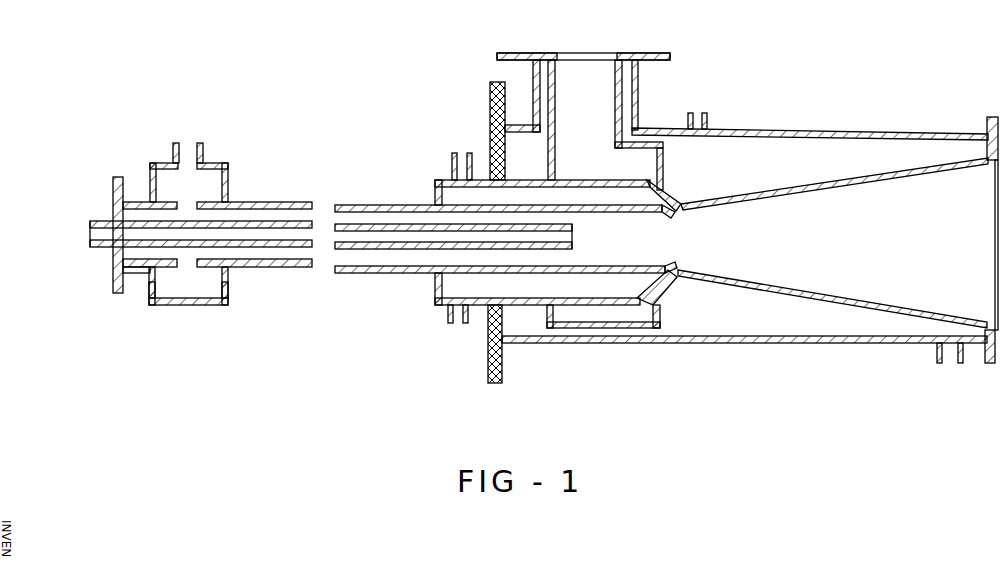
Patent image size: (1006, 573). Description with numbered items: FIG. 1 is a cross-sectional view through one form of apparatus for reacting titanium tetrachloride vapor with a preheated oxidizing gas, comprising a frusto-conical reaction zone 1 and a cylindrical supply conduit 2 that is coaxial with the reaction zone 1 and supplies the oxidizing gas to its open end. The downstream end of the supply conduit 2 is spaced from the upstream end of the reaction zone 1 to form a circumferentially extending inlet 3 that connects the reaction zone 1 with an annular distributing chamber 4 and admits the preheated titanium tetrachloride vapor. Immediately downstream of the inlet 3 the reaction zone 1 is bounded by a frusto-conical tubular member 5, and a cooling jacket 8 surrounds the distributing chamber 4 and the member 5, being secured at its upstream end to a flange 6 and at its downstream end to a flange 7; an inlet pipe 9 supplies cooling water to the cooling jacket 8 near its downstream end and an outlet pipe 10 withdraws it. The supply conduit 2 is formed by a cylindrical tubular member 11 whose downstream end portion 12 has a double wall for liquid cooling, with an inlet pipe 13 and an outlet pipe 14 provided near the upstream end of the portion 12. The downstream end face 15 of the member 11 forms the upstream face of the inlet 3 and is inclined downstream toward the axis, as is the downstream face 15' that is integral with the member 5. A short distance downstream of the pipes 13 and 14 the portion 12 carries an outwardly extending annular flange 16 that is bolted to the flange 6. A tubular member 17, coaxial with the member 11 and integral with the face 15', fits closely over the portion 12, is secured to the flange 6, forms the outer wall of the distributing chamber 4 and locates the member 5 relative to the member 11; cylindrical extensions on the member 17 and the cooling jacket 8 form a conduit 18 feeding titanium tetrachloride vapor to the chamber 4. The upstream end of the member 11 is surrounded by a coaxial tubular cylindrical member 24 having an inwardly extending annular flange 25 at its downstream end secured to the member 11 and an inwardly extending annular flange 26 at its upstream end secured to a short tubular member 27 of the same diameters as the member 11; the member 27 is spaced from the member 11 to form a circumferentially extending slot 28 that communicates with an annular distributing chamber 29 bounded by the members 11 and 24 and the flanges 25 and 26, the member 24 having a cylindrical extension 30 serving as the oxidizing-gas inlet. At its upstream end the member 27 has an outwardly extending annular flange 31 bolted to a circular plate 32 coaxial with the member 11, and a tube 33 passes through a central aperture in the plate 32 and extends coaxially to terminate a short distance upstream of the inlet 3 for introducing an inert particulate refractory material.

The reaction zone 1 is at (666, 201).
The supply conduit 2 is at (606, 263).
The inlet 3 is at (678, 213).
The annular distributing chamber 4 is at (628, 321).
The frusto-conical tubular member 5 is at (779, 197).
The flange 6 is at (503, 365).
The flange 7 is at (984, 356).
The cooling jacket 8 is at (772, 130).
The inlet pipe 9 is at (937, 362).
The outlet pipe 10 is at (707, 123).
The cylindrical tubular member 11 is at (354, 204).
The downstream end portion 12 is at (575, 180).
The inlet pipe 13 is at (452, 157).
The outlet pipe 14 is at (448, 313).
The downstream end face 15 is at (654, 182).
The downstream face 15' is at (679, 277).
The annular flange 16 is at (490, 97).
The tubular member 17 is at (600, 318).
The conduit 18 is at (558, 65).
The tubular cylindrical member 24 is at (200, 306).
The annular flange 25 is at (229, 290).
The annular flange 26 is at (147, 290).
The tubular member 27 is at (131, 273).
The slot 28 is at (183, 262).
The annular distributing chamber 29 is at (189, 193).
The cylindrical extension 30 is at (203, 151).
The annular flange 31 is at (122, 178).
The circular plate 32 is at (113, 192).
The tube 33 is at (98, 247).